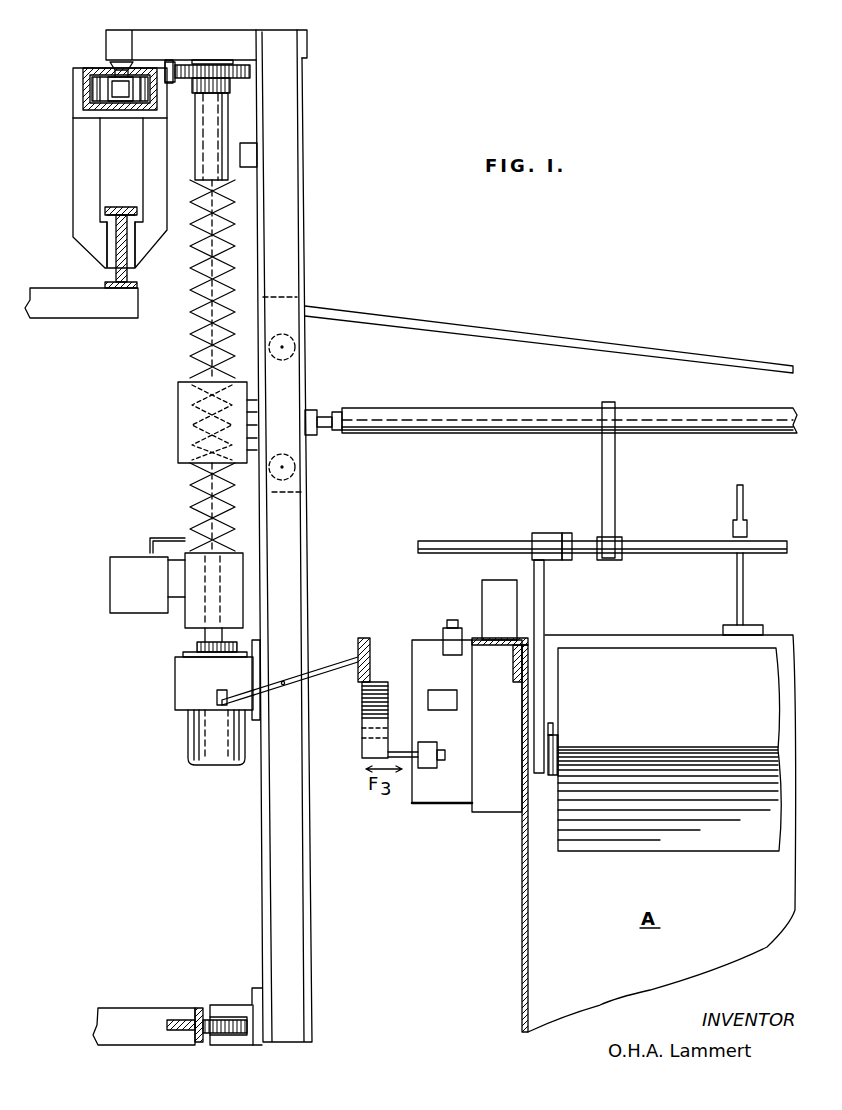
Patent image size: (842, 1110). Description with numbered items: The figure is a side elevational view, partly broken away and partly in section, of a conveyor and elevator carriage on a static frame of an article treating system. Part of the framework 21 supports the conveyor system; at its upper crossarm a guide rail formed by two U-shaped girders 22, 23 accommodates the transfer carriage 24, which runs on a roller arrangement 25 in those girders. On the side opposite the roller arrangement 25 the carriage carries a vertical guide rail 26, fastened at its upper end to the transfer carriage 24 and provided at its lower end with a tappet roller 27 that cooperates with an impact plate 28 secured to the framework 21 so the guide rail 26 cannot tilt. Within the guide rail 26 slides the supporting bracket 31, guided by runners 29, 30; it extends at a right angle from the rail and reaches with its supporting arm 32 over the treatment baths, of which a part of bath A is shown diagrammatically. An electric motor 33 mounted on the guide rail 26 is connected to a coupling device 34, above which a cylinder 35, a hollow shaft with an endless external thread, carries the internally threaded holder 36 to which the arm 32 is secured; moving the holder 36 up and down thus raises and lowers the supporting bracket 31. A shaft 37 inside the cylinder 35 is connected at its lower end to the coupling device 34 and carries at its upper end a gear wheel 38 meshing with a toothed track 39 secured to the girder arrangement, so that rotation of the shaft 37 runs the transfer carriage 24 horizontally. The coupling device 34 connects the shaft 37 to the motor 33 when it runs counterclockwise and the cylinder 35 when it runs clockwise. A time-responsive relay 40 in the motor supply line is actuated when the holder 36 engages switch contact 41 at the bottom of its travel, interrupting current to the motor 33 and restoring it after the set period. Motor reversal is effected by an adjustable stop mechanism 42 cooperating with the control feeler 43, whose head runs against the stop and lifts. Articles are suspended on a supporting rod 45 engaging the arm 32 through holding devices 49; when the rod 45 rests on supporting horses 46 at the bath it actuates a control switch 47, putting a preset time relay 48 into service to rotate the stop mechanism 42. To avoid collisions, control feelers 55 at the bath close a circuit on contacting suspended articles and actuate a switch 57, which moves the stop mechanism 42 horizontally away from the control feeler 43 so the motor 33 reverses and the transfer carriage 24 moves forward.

The framework 21 is at (150, 150).
The U-shaped girder 22 is at (86, 95).
The U-shaped girder 23 is at (150, 110).
The transfer carriage 24 is at (306, 46).
The roller arrangement 25 is at (118, 84).
The guide rail 26 is at (288, 220).
The tappet roller 27 is at (234, 1022).
The impact plate 28 is at (188, 1008).
The runner 29 is at (297, 352).
The runner 30 is at (297, 470).
The supporting bracket 31 is at (540, 338).
The supporting arm 32 is at (470, 428).
The electric motor 33 is at (192, 746).
The coupling device 34 is at (193, 618).
The cylinder 35 is at (228, 132).
The holder 36 is at (178, 434).
The shaft 37 is at (192, 350).
The gear wheel 38 is at (250, 72).
The toothed track 39 is at (182, 58).
The time-responsive relay 40 is at (118, 576).
The switch contact 41 is at (166, 538).
The stop mechanism 42 is at (365, 740).
The control feeler 43 is at (340, 665).
The supporting rod 45 is at (702, 541).
The supporting horse 46 is at (490, 595).
The control switch 47 is at (448, 624).
The time relay 48 is at (430, 693).
The holding device 49 is at (602, 488).
The control feeler 55 is at (745, 545).
The switch 57 is at (428, 770).